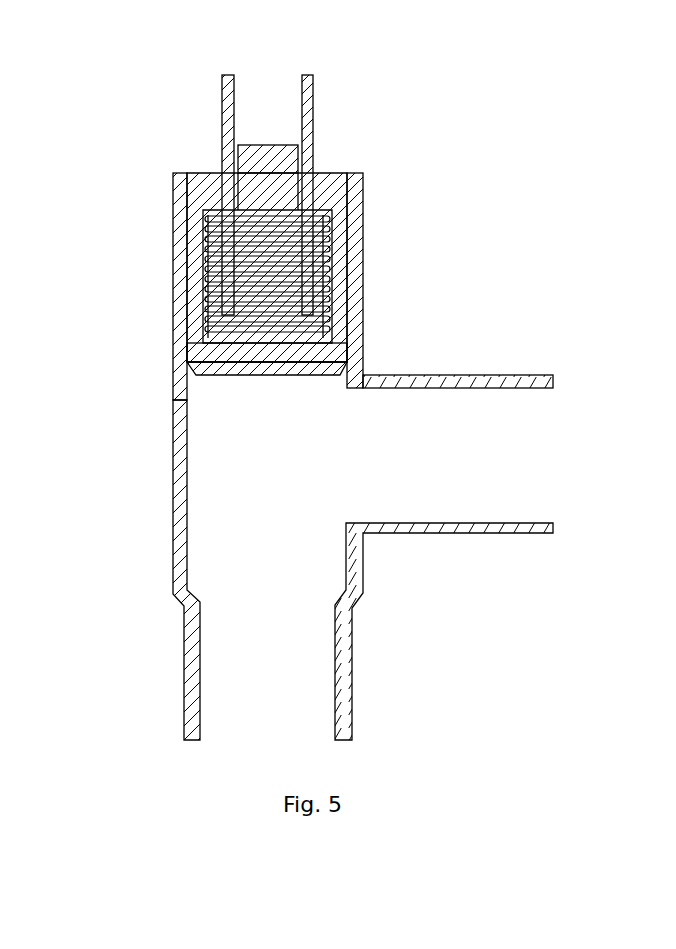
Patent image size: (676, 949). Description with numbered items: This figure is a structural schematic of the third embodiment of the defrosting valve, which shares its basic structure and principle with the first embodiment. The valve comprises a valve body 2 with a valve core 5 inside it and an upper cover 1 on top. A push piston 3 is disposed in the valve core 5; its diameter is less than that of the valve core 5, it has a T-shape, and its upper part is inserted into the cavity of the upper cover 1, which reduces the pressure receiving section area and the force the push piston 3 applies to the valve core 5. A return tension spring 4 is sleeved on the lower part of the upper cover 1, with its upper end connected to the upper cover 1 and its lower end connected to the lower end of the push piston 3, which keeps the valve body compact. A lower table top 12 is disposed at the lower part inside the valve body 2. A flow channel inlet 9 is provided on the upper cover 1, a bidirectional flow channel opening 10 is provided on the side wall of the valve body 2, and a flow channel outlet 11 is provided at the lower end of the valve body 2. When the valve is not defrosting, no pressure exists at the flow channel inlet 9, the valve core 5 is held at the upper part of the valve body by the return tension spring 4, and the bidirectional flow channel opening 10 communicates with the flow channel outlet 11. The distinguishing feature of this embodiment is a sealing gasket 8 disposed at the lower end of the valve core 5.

The upper cover 1 is at (317, 173).
The valve body 2 is at (363, 250).
The push piston 3 is at (268, 194).
The return tension spring 4 is at (232, 278).
The valve core 5 is at (185, 357).
The sealing gasket 8 is at (352, 363).
The flow channel inlet 9 is at (288, 118).
The bidirectional flow channel opening 10 is at (427, 435).
The flow channel outlet 11 is at (313, 685).
The lower table top 12 is at (183, 600).